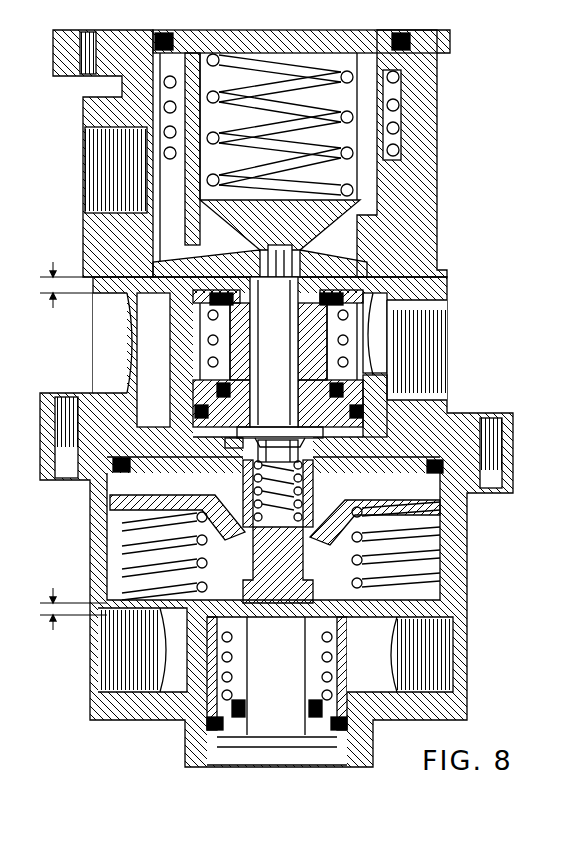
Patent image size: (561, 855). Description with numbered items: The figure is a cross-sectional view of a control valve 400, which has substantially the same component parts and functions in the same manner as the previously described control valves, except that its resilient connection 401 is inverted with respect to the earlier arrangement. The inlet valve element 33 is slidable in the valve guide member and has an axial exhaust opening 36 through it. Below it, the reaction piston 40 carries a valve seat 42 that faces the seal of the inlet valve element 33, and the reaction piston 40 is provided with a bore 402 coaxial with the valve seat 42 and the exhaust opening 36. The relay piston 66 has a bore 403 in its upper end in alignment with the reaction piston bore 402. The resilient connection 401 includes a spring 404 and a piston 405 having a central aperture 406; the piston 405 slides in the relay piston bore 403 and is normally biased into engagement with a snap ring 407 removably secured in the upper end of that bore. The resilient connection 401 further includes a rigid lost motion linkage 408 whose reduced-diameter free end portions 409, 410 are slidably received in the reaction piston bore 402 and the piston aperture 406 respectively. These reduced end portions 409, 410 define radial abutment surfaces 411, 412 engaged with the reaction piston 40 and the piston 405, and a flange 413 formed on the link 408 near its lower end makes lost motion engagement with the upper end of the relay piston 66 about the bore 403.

The control valve 400 is at (441, 190).
The reaction piston 40 is at (190, 187).
The free end portion 409 is at (283, 215).
The valve seat 42 is at (238, 258).
The radial abutment surface 411 is at (252, 258).
The bore 402 is at (283, 254).
The inlet valve element 33 is at (237, 328).
The exhaust opening 36 is at (310, 328).
The lost motion linkage 408 is at (278, 365).
The resilient connection 401 is at (377, 392).
The radial abutment surface 412 is at (280, 423).
The flange 413 is at (236, 446).
The snap ring 407 is at (312, 456).
The piston 405 is at (250, 468).
The aperture 406 is at (306, 478).
The bore 403 is at (312, 515).
The spring 404 is at (262, 552).
The free end portion 410 is at (286, 470).
The relay piston 66 is at (306, 560).